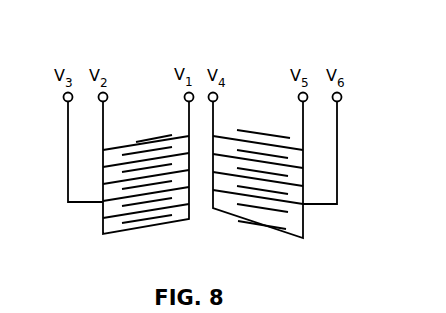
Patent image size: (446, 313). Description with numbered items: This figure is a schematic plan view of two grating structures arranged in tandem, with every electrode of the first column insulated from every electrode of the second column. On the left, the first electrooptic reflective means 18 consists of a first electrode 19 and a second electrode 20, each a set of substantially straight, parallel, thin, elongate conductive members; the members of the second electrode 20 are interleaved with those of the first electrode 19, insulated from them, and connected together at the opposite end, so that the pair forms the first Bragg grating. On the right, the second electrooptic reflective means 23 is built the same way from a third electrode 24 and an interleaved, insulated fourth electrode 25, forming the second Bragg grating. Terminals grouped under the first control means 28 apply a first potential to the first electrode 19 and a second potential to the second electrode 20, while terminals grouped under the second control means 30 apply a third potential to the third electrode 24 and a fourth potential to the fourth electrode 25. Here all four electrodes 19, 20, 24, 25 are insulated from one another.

The first electrooptic reflective means 18 is at (147, 232).
The first electrode 19 is at (137, 141).
The second electrode 20 is at (180, 136).
The second electrooptic reflective means 23 is at (275, 243).
The third electrode 24 is at (293, 143).
The fourth electrode 25 is at (221, 136).
The first control means 28 is at (53, 60).
The second control means 30 is at (347, 60).